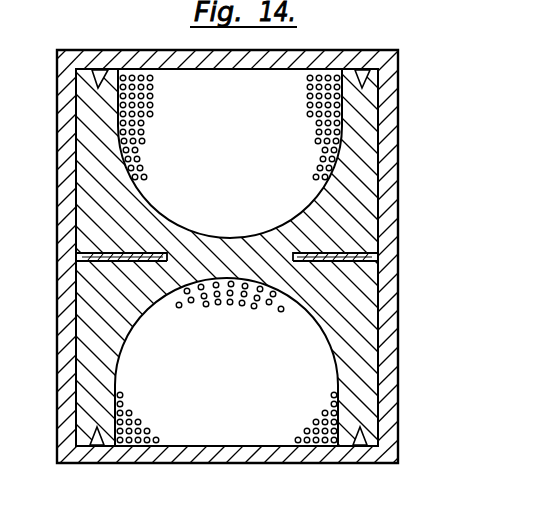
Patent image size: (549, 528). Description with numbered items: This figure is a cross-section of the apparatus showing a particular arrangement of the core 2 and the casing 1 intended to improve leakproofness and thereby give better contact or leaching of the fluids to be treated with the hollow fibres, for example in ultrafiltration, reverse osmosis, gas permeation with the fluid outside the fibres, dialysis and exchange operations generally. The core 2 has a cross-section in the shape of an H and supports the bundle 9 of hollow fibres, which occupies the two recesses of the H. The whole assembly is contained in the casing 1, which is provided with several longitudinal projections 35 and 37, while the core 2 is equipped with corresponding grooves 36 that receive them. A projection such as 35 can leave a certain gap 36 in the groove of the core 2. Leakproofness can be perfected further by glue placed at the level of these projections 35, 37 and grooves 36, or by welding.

The casing 1 is at (392, 205).
The core 2 is at (370, 364).
The bundle of hollow fibres 9 is at (342, 135).
The longitudinal projection 35 is at (348, 268).
The groove 36 is at (296, 252).
The longitudinal projection 37 is at (398, 86).